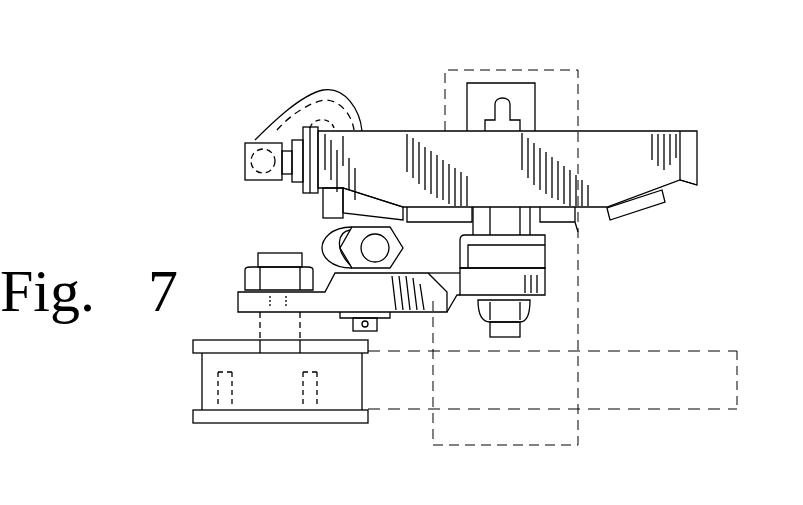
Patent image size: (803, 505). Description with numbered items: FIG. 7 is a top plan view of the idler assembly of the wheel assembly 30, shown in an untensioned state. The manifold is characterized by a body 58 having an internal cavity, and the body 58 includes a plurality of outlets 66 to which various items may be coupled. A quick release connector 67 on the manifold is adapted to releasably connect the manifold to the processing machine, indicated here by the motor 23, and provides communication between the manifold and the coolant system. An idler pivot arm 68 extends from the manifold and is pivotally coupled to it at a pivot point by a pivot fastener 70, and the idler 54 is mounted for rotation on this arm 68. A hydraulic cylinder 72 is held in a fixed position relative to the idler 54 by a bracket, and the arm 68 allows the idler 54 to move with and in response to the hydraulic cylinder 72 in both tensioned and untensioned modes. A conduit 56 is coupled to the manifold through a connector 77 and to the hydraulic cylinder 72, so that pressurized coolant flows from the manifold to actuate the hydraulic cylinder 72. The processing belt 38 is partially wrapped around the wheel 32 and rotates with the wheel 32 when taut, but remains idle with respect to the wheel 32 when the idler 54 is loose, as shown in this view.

The wheel assembly 30 is at (150, 88).
The body 58 is at (623, 138).
The conduit 56 is at (327, 90).
The connector 77 is at (247, 152).
The outlets 66 is at (304, 197).
The hydraulic cylinder 72 is at (328, 242).
The idler pivot arm 68 is at (438, 284).
The pivot fastener 70 is at (540, 256).
The idler 54 is at (204, 376).
The motor 23 is at (578, 322).
The processing belt 38 is at (690, 347).
The wheel 32 is at (690, 410).
The quick release connector 67 is at (522, 122).